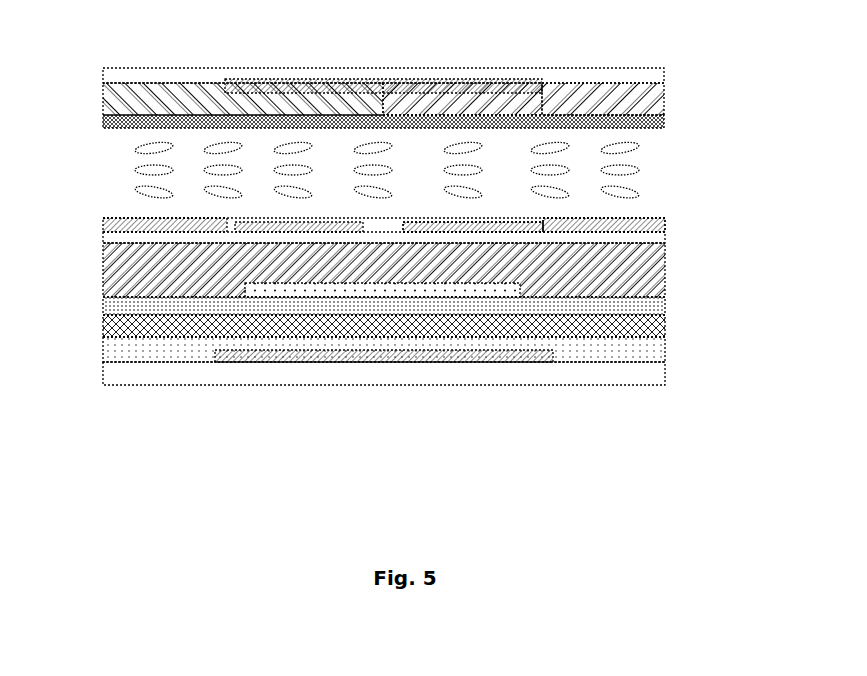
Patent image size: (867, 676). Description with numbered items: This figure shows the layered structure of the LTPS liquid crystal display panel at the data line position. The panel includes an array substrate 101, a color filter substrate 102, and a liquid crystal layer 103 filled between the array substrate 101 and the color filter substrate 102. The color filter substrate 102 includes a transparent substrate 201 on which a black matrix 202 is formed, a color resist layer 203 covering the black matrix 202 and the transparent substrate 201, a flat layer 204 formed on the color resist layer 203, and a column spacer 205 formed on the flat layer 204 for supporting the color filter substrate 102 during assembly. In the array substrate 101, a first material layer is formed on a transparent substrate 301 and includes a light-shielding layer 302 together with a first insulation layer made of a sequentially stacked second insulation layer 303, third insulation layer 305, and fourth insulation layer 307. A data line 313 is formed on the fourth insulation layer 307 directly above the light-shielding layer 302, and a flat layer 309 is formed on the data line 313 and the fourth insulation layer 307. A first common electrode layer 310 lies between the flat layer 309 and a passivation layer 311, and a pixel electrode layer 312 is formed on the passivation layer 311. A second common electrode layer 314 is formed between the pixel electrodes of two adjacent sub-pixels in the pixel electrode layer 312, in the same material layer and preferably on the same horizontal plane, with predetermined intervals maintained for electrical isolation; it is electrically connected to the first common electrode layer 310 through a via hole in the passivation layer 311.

The array substrate 101 is at (403, 358).
The color filter substrate 102 is at (402, 73).
The liquid crystal layer 103 is at (145, 172).
The transparent substrate 201 is at (660, 70).
The black matrix 202 is at (373, 88).
The color resist layer 203 is at (656, 100).
The flat layer 204 is at (660, 118).
The column spacer 205 is at (509, 122).
The transparent substrate 301 is at (657, 378).
The light-shielding layer 302 is at (340, 355).
The second insulation layer 303 is at (657, 357).
The third insulation layer 305 is at (657, 325).
The fourth insulation layer 307 is at (657, 305).
The flat layer 309 is at (657, 265).
The common electrode layer 310 is at (657, 237).
The passivation layer 311 is at (560, 222).
The pixel electrode layer 312 is at (641, 218).
The data line 313 is at (458, 290).
The second common electrode layer 314 is at (252, 218).